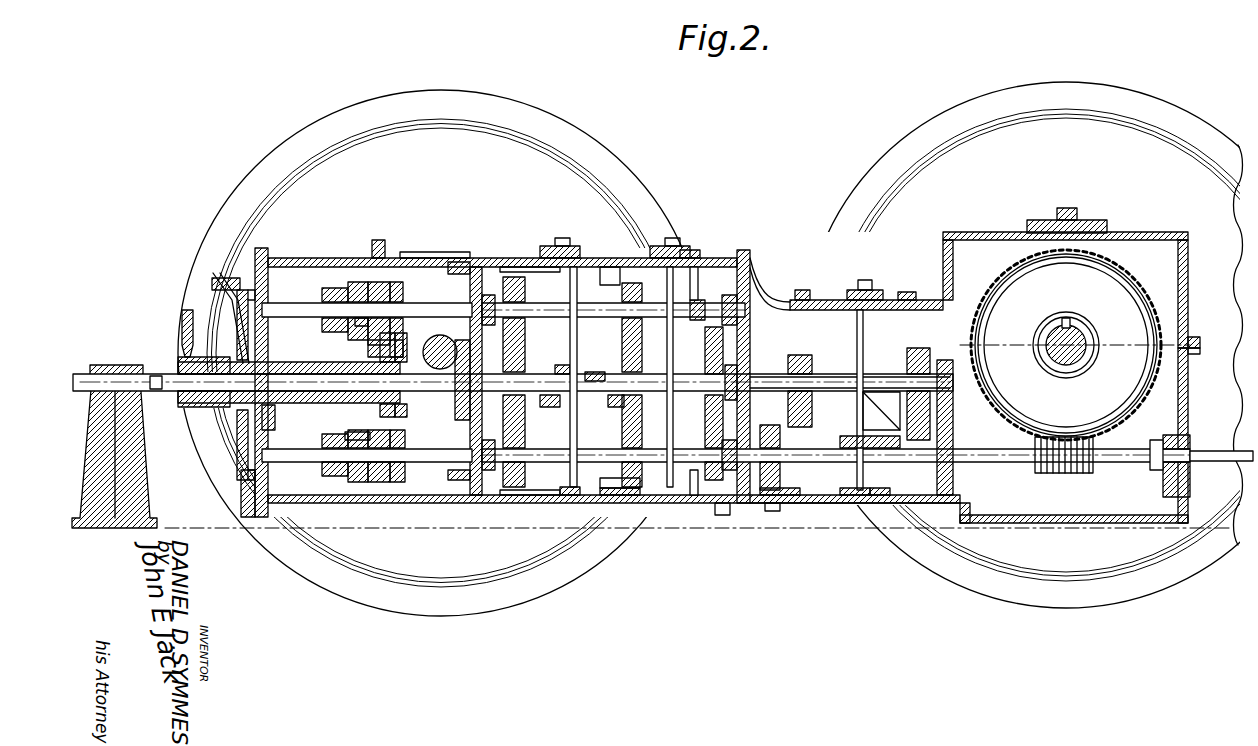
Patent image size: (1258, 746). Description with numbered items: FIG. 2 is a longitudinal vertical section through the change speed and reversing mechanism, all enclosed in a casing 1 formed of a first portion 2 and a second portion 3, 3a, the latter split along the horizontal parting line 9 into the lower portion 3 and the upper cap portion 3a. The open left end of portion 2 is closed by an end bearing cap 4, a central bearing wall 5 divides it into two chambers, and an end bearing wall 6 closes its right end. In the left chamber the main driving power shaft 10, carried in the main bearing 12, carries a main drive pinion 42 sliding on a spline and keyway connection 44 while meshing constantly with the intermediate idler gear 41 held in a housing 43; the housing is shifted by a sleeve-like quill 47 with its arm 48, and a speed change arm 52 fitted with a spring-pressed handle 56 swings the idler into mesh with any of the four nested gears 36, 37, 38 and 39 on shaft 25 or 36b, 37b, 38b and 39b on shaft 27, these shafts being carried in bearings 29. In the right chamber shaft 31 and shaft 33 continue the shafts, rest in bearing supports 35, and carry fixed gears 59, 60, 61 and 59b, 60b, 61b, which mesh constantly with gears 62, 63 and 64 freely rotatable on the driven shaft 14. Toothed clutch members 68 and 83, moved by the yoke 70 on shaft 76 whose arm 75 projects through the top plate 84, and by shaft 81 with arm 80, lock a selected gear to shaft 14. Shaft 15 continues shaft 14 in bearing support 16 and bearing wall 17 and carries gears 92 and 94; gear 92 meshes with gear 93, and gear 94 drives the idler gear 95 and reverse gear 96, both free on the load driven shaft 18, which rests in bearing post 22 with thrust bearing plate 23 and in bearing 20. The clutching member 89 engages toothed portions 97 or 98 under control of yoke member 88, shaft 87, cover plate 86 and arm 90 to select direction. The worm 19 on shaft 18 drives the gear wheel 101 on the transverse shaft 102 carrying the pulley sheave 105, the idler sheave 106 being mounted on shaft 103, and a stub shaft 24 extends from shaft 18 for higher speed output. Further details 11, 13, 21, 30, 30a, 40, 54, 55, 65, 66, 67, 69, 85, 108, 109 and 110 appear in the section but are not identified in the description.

The casing 1 is at (735, 505).
The casing portion 2 is at (264, 262).
The lower housing portion 3 is at (830, 505).
The upper housing or cap portion 3a is at (960, 236).
The end bearing cap 4 is at (253, 490).
The central bearing wall 5 is at (472, 503).
The end bearing wall 6 is at (722, 515).
The parting line 9 is at (905, 296).
The main driving power shaft 10 is at (170, 392).
The pedestal bearing 11 is at (137, 495).
The main bearing 12 is at (270, 420).
The hub 13 is at (462, 405).
The driven shaft 14 is at (622, 455).
The shaft 15 is at (765, 377).
The bearing support 16 is at (740, 362).
The bearing wall or support 17 is at (953, 420).
The load driven shaft 18 is at (1010, 462).
The worm 19 is at (1065, 473).
The bearing 20 is at (1163, 482).
The lower housing 21 is at (1035, 525).
The bearing post or wall 22 is at (780, 497).
The thrust bearing plate 23 is at (772, 511).
The stub shaft 24 is at (1215, 448).
The shaft 25 is at (275, 306).
The shaft 27 is at (300, 460).
The bearings 29 is at (250, 330).
The bearing cap 30 is at (455, 262).
The curved wall 30a is at (767, 288).
The shaft 31 is at (540, 310).
The shaft 33 is at (565, 498).
The bearing support 35 is at (748, 262).
The speed gear 36 is at (332, 288).
The speed gear 36b is at (340, 476).
The speed gear 37 is at (355, 282).
The speed gear 37b is at (355, 503).
The speed gear 38 is at (385, 282).
The speed gear 38b is at (390, 503).
The speed gear 39 is at (400, 280).
The speed gear 39b is at (410, 503).
The collar 40 is at (355, 322).
The intermediate idler gear 41 is at (368, 348).
The main drive pinion 42 is at (375, 440).
The housing 43 is at (392, 400).
The spline and keyway connection 44 is at (300, 373).
The sleeve-like quill 47 is at (340, 400).
The arm 48 is at (180, 338).
The speed change arm 52 is at (222, 325).
The hub 54 is at (222, 408).
The hub 55 is at (235, 430).
The spring-pressed handle 56 is at (225, 282).
The gear 59 is at (486, 295).
The gear 59b is at (486, 495).
The gear 60 is at (612, 267).
The gear 60b is at (635, 478).
The gear 61 is at (730, 295).
The gear 61b is at (728, 472).
The gear 62 is at (525, 325).
The gear 63 is at (622, 325).
The gear 64 is at (695, 300).
The collar 65 is at (552, 408).
The collar 66 is at (596, 372).
The gear 67 is at (705, 450).
The toothed clutch member 68 is at (560, 365).
The collar 69 is at (615, 407).
The yoke 70 is at (576, 330).
The arm 75 is at (558, 246).
The shaft 76 is at (535, 267).
The actuating arm 80 is at (685, 250).
The shaft 81 is at (694, 267).
The toothed clutch member 83 is at (620, 498).
The top plate 84 is at (660, 246).
The plate 85 is at (420, 252).
The cover plate 86 is at (803, 290).
The shaft 87 is at (863, 330).
The yoke member 88 is at (875, 436).
The clutching member 89 is at (855, 497).
The arm 90 is at (864, 280).
The gear 92 is at (920, 348).
The gear 93 is at (935, 510).
The gear 94 is at (800, 355).
The intermediate idler gear 95 is at (840, 392).
The reverse gear 96 is at (775, 495).
The toothed portion 97 is at (785, 440).
The toothed portion 98 is at (880, 497).
The gear wheel 101 is at (990, 300).
The shaft 102 is at (1070, 355).
The shaft 103 is at (435, 338).
The sheave or pulley 105 is at (922, 130).
The idler sheave 106 is at (578, 132).
The cap 108 is at (1088, 228).
The stud 109 is at (1066, 208).
The bolt 110 is at (378, 240).